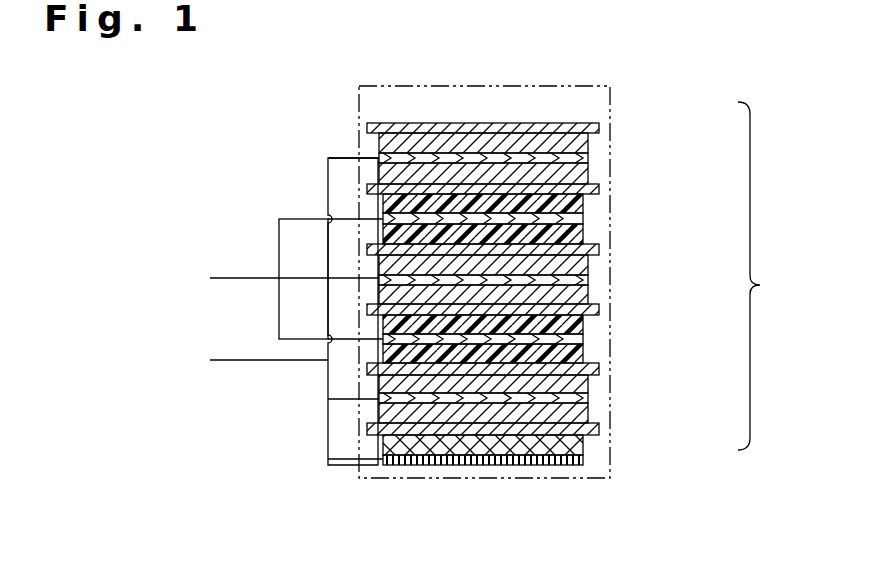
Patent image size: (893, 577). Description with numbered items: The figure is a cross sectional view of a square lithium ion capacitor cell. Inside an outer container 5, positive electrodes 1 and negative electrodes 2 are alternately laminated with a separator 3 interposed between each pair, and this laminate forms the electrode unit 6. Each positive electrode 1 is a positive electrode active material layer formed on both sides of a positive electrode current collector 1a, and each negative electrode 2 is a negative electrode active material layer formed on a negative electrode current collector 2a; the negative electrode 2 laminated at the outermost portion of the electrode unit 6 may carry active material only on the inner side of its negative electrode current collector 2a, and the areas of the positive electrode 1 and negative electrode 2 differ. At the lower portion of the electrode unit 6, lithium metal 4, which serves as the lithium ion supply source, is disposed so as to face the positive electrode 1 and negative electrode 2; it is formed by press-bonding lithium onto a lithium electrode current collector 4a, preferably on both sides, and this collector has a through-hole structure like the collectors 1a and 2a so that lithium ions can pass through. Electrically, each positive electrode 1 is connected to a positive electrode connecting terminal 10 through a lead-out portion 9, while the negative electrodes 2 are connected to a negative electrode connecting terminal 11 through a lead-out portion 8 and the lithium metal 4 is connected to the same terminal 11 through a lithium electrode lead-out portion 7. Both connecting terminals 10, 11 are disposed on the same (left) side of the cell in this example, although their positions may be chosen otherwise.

The positive electrode 1 is at (583, 205).
The positive electrode current collector 1a is at (600, 219).
The negative electrode 2 is at (588, 143).
The negative electrode current collector 2a is at (600, 158).
The separator 3 is at (599, 128).
The lithium metal 4 is at (588, 445).
The lithium electrode current collector 4a is at (583, 461).
The outer container 5 is at (550, 479).
The electrode unit 6 is at (574, 276).
The lithium electrode lead-out portion 7 is at (338, 466).
The lead-out portion 8 is at (343, 157).
The lead-out portion 9 is at (298, 218).
The positive electrode connecting terminal 10 is at (234, 277).
The negative electrode connecting terminal 11 is at (248, 362).